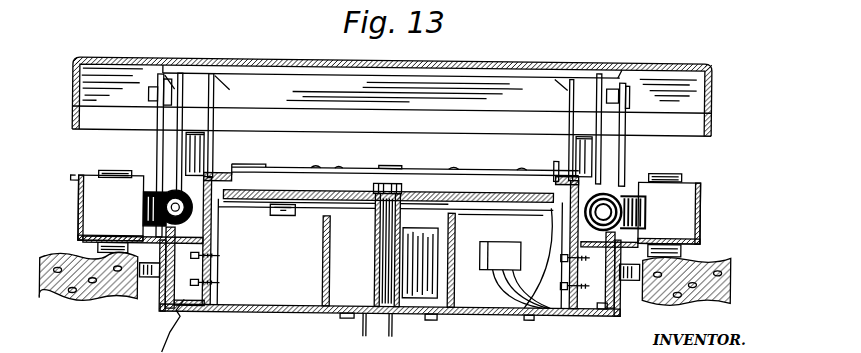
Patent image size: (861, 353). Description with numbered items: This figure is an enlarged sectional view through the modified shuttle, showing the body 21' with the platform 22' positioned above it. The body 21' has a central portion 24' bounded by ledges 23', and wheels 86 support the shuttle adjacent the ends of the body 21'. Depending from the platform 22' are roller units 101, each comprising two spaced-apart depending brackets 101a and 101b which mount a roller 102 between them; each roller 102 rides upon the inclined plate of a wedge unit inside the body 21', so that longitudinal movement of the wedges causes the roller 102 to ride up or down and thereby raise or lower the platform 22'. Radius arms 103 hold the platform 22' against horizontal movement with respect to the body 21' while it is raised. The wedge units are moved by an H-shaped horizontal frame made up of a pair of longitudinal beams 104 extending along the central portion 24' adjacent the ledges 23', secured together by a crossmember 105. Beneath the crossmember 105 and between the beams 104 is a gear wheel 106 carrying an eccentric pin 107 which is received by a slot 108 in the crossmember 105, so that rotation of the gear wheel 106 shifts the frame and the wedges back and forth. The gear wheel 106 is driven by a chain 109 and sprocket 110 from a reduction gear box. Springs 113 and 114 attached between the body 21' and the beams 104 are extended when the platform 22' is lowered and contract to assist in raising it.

The platform 22' is at (392, 88).
The depending roller unit 101 is at (175, 138).
The depending bracket 101a is at (186, 98).
The depending bracket 101b is at (214, 122).
The roller 102 is at (202, 146).
The radius arm 103 is at (159, 118).
The longitudinal beam 104 is at (237, 164).
The crossmember 105 is at (434, 176).
The gear wheel 106 is at (262, 204).
The eccentric pin 107 is at (404, 165).
The slot 108 is at (342, 165).
The chain 109 is at (553, 205).
The sprocket 110 is at (296, 216).
The spring 113 is at (638, 209).
The spring 114 is at (140, 203).
The body 21' is at (146, 295).
The ledge 23' is at (385, 241).
The central portion 24' is at (391, 255).
The wheel 86 is at (112, 175).